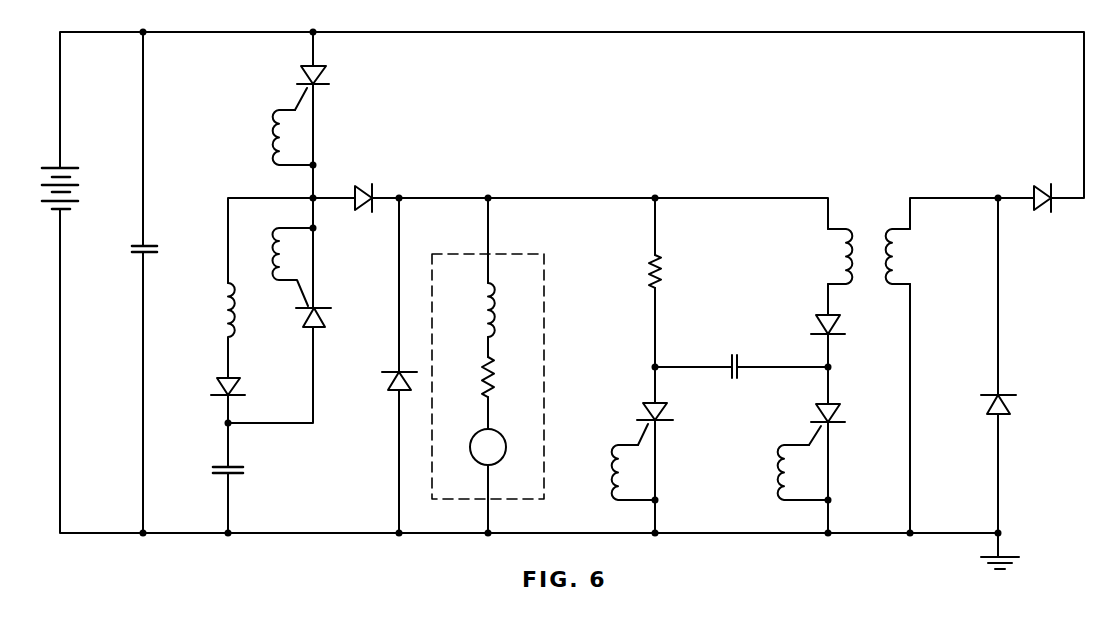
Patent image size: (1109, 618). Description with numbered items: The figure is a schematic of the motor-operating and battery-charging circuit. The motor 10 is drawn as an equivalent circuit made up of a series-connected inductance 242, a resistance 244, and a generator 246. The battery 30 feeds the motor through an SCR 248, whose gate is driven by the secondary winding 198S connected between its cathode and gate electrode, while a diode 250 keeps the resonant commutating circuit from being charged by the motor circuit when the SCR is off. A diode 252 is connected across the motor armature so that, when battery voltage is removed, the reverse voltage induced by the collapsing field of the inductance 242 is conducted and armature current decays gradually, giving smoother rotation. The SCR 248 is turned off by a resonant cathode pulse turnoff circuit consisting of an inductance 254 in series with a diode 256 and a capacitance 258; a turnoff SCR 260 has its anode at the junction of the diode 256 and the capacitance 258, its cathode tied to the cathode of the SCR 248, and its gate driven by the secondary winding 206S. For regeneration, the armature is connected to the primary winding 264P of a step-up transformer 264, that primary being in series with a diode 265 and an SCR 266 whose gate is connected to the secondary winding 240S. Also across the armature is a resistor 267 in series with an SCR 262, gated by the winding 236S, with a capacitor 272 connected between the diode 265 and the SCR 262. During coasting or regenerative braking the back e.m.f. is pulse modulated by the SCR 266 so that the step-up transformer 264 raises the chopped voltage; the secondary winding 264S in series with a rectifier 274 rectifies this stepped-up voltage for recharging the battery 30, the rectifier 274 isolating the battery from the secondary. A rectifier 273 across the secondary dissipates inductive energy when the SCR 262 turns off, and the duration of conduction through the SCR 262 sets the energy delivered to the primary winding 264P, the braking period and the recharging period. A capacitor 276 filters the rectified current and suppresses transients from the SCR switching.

The battery 30 is at (47, 166).
The capacitor 276 is at (149, 244).
The SCR 248 is at (324, 78).
The secondary winding 198S is at (272, 120).
The diode 250 is at (360, 185).
The secondary winding 206S is at (268, 232).
The turnoff SCR 260 is at (326, 320).
The inductance 254 is at (226, 298).
The diode 256 is at (220, 380).
The capacitance 258 is at (243, 467).
The diode 252 is at (389, 384).
The motor 10 is at (518, 254).
The inductance 242 is at (488, 292).
The resistance 244 is at (494, 384).
The generator 246 is at (498, 430).
The resistor 267 is at (662, 264).
The capacitor 272 is at (733, 354).
The SCR 262 is at (667, 412).
The primary winding 236S is at (615, 450).
The step-up transformer 264 is at (870, 225).
The primary winding 264P is at (845, 256).
The secondary winding 264S is at (892, 254).
The diode 265 is at (838, 322).
The SCR 266 is at (834, 412).
The secondary winding 240S is at (782, 446).
The rectifier 273 is at (1012, 406).
The rectifier 274 is at (1036, 190).